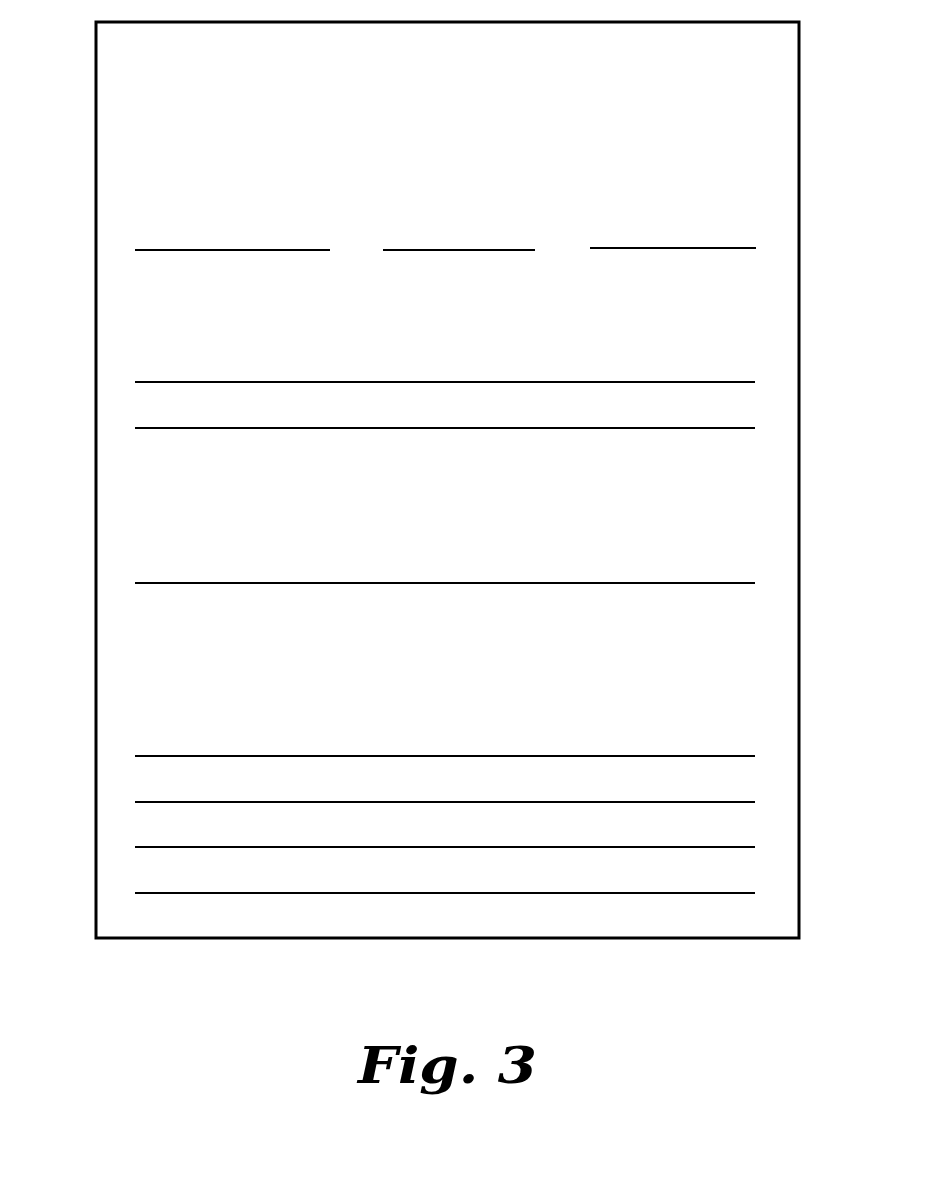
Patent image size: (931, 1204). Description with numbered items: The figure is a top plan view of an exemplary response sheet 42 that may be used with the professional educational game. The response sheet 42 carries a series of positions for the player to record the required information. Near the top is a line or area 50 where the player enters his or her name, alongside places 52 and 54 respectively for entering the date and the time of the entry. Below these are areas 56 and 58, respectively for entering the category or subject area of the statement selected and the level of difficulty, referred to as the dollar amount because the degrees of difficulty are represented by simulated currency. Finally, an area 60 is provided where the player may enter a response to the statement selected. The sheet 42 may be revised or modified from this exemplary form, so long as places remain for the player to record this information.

The response sheet 42 is at (145, 965).
The line or area for name 50 is at (143, 230).
The place for entering date 52 is at (708, 237).
The place for entering time 54 is at (418, 242).
The area for entering category 56 is at (155, 372).
The area for entering dollar amount 58 is at (145, 573).
The area for entering response 60 is at (153, 743).